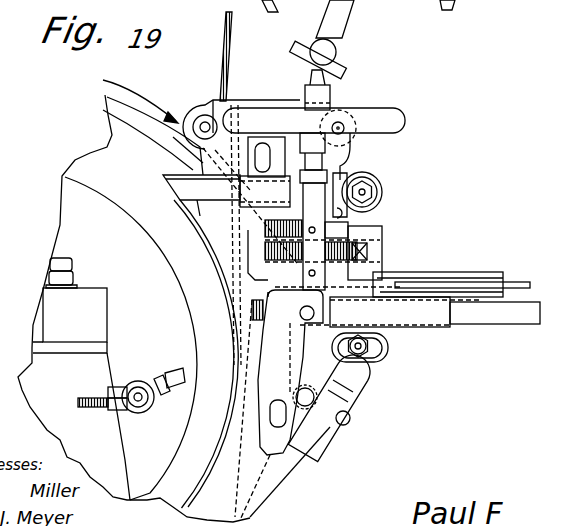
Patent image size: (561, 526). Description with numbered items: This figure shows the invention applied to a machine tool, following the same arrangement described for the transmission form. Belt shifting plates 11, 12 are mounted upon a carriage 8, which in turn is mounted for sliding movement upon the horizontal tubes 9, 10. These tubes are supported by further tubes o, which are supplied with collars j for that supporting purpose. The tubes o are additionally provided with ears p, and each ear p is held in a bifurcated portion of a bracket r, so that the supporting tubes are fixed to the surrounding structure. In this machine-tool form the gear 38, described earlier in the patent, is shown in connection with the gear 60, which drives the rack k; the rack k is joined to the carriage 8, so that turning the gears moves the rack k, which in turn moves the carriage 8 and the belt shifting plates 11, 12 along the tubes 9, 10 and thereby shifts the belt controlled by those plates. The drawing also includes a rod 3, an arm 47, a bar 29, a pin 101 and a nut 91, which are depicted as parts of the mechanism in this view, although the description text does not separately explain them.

The rod 3 is at (232, 47).
The arm 47 is at (383, 120).
The horizontal tube 10 is at (383, 190).
The gear 38 is at (345, 232).
The gear 60 is at (340, 245).
The rack k is at (368, 253).
The belt shifting plate 12 is at (473, 275).
The bar 29 is at (515, 284).
The pin 101 is at (316, 313).
The carriage 8 is at (387, 312).
The horizontal tube 9 is at (367, 350).
The nut 91 is at (362, 361).
The collar j is at (327, 407).
The tube o is at (172, 373).
The ear p is at (143, 384).
The bracket r is at (118, 411).
The belt shifting plate 11 is at (358, 55).